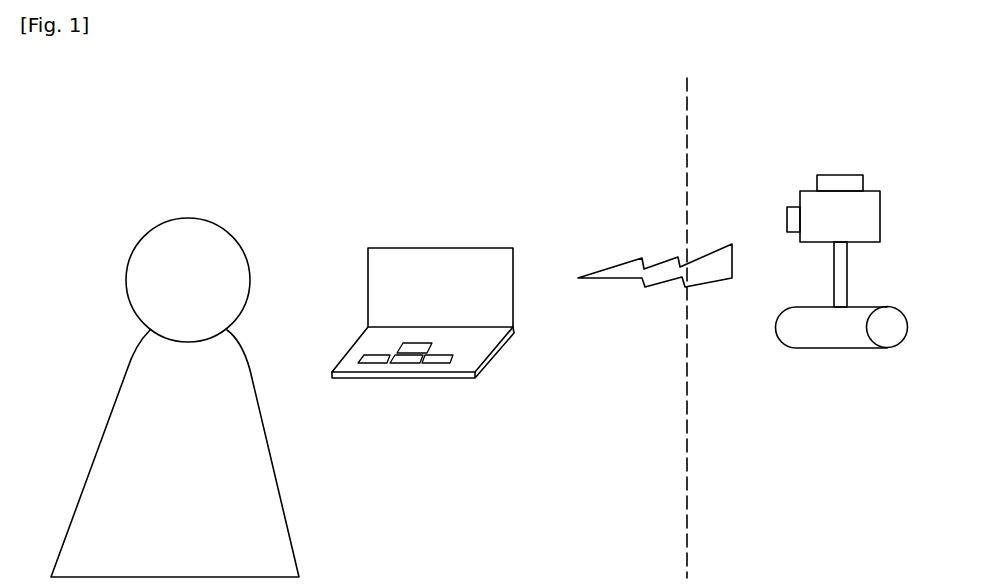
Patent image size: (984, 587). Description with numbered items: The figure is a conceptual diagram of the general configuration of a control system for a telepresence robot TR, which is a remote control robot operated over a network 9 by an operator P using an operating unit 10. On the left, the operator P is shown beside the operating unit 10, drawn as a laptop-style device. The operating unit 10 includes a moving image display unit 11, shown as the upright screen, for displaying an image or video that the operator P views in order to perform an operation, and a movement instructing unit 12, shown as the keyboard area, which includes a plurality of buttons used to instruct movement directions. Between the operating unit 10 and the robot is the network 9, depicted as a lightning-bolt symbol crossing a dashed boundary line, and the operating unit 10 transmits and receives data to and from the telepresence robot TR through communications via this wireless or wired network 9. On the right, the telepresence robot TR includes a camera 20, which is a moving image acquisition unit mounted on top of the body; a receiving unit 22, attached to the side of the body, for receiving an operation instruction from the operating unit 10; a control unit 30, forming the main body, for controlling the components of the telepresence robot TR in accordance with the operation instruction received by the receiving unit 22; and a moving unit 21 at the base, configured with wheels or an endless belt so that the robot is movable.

The operator P is at (132, 297).
The operating unit 10 is at (403, 230).
The moving image display unit 11 is at (431, 248).
The movement instructing unit 12 is at (343, 358).
The network 9 is at (633, 260).
The telepresence robot TR is at (840, 195).
The camera 20 is at (863, 175).
The receiving unit 22 is at (787, 208).
The control unit 30 is at (882, 228).
The moving unit 21 is at (888, 327).